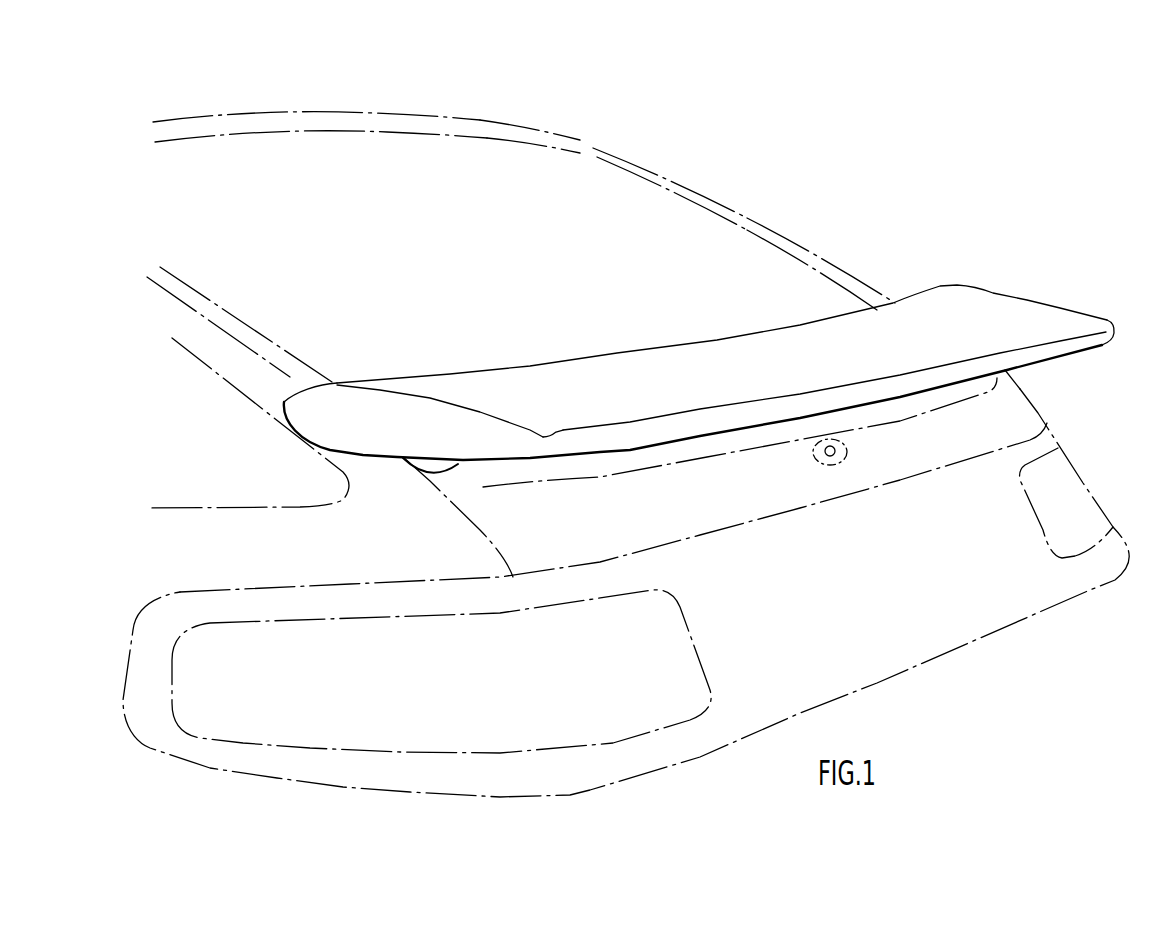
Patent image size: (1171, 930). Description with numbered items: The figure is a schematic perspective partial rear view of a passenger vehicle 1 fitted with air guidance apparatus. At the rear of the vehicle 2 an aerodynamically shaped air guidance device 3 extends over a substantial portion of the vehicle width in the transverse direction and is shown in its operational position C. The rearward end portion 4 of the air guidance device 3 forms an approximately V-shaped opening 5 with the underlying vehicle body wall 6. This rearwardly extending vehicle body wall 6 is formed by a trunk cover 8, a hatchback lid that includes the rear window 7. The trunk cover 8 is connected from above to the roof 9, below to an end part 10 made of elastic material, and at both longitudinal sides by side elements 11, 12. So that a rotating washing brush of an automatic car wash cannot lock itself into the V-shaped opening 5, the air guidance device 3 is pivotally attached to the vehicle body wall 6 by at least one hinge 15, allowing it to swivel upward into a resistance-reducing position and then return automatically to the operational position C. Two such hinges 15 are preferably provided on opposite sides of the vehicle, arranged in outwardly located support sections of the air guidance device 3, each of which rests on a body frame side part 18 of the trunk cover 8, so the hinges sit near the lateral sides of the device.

The passenger vehicle 1 is at (605, 124).
The rear of the vehicle 2 is at (883, 271).
The air guidance device 3 is at (1041, 294).
The end portion 4 is at (617, 452).
The V-shaped opening 5 is at (535, 468).
The vehicle body wall 6 is at (467, 490).
The rear window 7 is at (455, 250).
The trunk cover 8 is at (930, 463).
The roof 9 is at (128, 88).
The end part 10 is at (948, 623).
The side element 11 is at (214, 349).
The side element 12 is at (801, 237).
The hinge 15 is at (400, 463).
The body frame side part 18 is at (302, 357).
The operational position C is at (1121, 314).